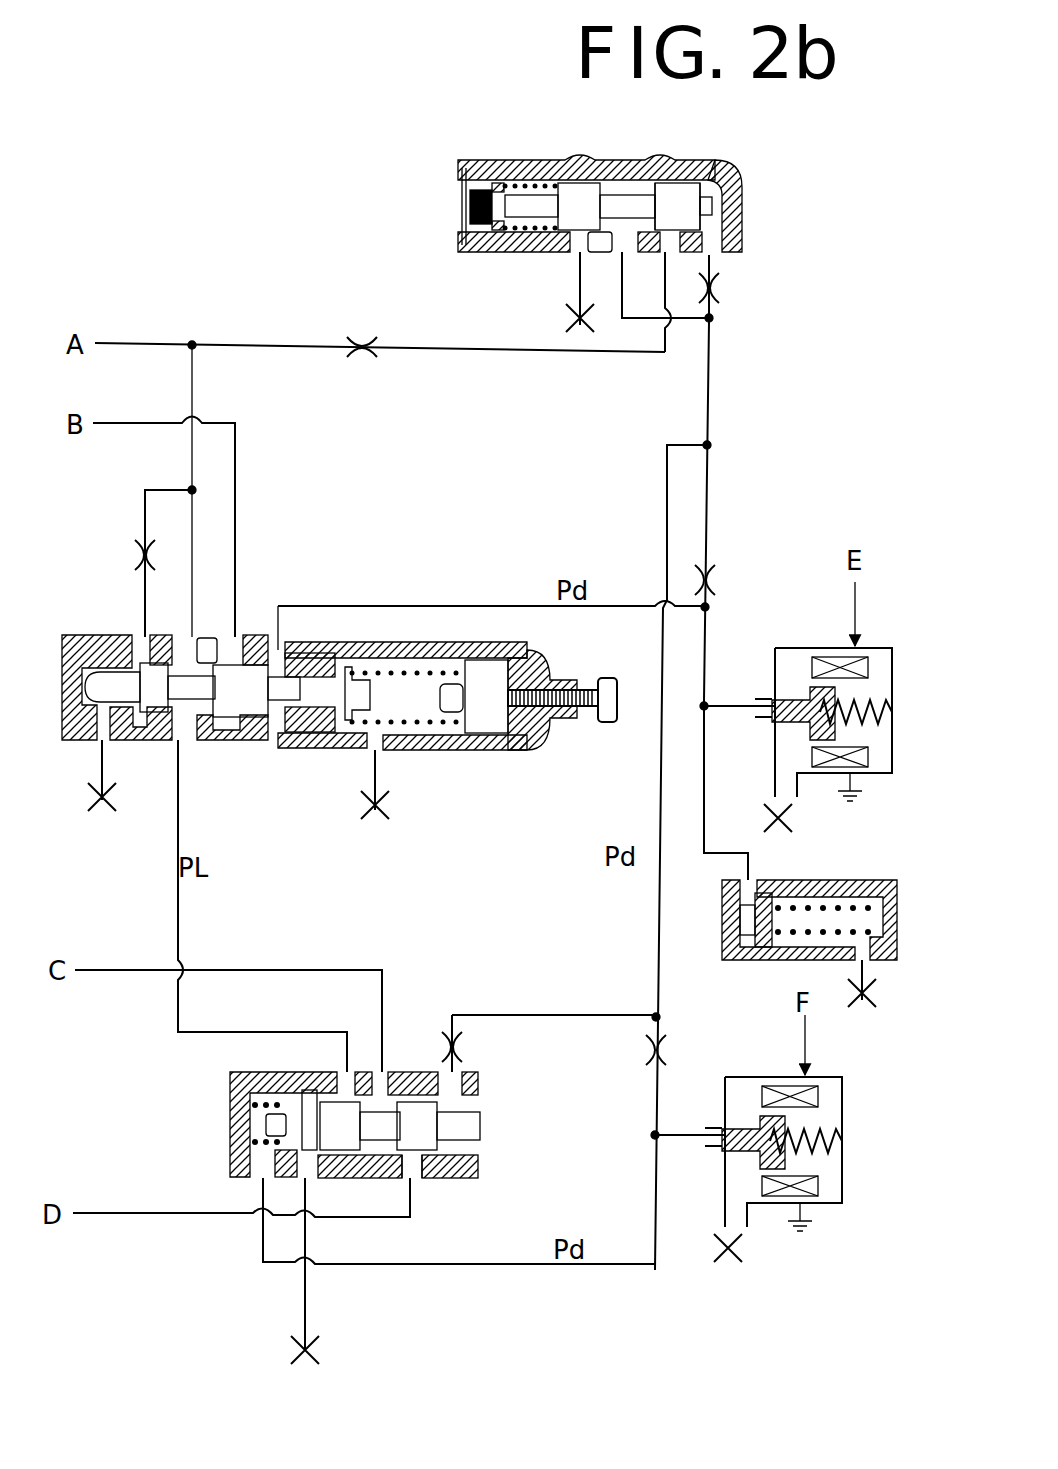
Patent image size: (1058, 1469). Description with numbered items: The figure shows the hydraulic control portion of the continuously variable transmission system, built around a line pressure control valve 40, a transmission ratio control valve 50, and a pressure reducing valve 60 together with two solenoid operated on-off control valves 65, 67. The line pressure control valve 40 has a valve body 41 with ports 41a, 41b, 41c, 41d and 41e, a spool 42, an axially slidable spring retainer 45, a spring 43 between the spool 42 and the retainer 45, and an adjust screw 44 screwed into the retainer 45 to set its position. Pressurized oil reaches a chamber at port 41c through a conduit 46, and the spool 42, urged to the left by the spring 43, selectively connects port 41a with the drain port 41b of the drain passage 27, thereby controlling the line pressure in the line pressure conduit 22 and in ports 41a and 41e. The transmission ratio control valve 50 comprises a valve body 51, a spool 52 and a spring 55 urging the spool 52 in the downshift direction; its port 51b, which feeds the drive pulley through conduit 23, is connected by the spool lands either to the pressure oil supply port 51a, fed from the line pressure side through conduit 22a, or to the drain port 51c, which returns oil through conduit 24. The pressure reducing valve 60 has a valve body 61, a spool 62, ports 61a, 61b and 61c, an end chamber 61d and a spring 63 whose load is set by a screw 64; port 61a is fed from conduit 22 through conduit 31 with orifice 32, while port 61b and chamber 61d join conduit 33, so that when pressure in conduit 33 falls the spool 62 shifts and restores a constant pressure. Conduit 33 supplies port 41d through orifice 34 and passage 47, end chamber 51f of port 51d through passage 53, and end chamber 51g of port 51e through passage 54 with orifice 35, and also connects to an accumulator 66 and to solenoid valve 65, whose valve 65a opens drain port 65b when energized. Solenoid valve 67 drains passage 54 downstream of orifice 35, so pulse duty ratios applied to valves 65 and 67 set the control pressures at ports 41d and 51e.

The line pressure conduit 22 is at (150, 344).
The conduit 22a is at (182, 940).
The conduit 23 is at (155, 970).
The conduit 24 is at (145, 1222).
The drain passage 27 is at (158, 423).
The conduit 31 is at (490, 352).
The orifice 32 is at (365, 343).
The conduit 33 is at (712, 378).
The orifice 34 is at (714, 580).
The orifice 35 is at (650, 1050).
The line pressure control valve 40 is at (168, 678).
The valve body 41 is at (447, 723).
The port 41a is at (190, 635).
The drain port 41b is at (235, 635).
The port 41c is at (145, 635).
The port 41d is at (285, 640).
The port 41e is at (170, 745).
The spool 42 is at (225, 735).
The spring 43 is at (420, 735).
The adjust screw 44 is at (605, 722).
The spring retainer 45 is at (495, 740).
The conduit 46 is at (145, 520).
The passage 47 is at (470, 605).
The transmission ratio control valve 50 is at (364, 1109).
The valve body 51 is at (460, 1180).
The pressure oil supply port 51a is at (340, 1072).
The port 51b is at (385, 1060).
The drain port 51c is at (392, 1172).
The port 51d is at (478, 1088).
The port 51e is at (258, 1178).
The end chamber 51f is at (480, 1160).
The end chamber 51g is at (250, 1125).
The spool 52 is at (410, 1190).
The passage 53 is at (520, 1015).
The passage 54 is at (495, 1270).
The spring 55 is at (240, 1095).
The pressure reducing valve 60 is at (648, 258).
The valve body 61 is at (655, 185).
The port 61a is at (660, 300).
The port 61b is at (612, 320).
The port 61c is at (578, 242).
The end chamber 61d is at (740, 182).
The spool 62 is at (690, 195).
The spring 63 is at (530, 185).
The screw 64 is at (478, 190).
The solenoid operated on-off control valve 65 is at (798, 707).
The valve 65a is at (785, 722).
The drain port 65b is at (762, 700).
The accumulator 66 is at (870, 880).
The solenoid operated on-off control valve 67 is at (845, 1185).